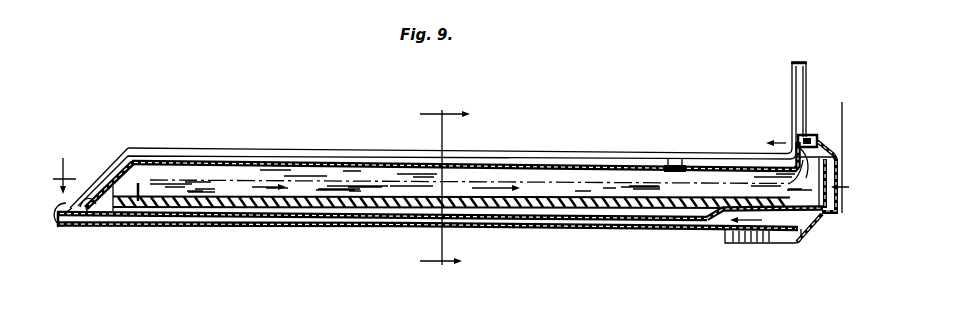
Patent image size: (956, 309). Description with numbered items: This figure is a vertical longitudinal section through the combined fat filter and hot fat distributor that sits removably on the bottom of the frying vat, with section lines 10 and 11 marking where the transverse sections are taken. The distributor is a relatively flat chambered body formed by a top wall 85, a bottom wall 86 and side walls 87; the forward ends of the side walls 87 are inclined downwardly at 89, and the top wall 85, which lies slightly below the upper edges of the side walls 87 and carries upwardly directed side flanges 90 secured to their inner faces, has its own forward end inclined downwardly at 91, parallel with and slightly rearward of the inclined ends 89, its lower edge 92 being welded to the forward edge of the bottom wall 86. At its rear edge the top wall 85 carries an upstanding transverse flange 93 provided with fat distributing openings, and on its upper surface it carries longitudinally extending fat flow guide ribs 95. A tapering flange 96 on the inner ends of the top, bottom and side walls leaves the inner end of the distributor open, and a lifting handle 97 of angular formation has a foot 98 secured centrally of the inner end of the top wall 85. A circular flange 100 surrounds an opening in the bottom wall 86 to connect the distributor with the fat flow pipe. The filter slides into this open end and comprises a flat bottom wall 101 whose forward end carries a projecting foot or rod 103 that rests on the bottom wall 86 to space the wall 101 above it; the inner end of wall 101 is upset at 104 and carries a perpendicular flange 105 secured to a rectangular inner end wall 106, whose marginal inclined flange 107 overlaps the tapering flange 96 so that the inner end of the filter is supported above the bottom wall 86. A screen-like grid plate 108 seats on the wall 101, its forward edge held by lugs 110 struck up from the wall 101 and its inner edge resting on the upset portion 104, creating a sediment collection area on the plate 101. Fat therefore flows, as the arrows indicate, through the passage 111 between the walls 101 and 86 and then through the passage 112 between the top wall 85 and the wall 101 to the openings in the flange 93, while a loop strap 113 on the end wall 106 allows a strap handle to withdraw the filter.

The section line 10- 10 is at (433, 190).
The section line 11- 11 is at (451, 148).
The top wall 85 is at (497, 164).
The bottom wall 86 is at (260, 227).
The side walls 87 is at (308, 148).
The downwardly inclined forward ends 89 is at (110, 166).
The side flanges 90 is at (530, 152).
The downwardly inclined forward end 91 is at (84, 220).
The lower edge 92 is at (61, 226).
The upstanding transversely extending flange 93 is at (793, 112).
The fat flow guide ribs 95 is at (233, 161).
The tapering flange 96 is at (807, 137).
The lifting handle 97 is at (796, 91).
The foot 98 is at (708, 157).
The circular flange 100 is at (724, 242).
The flat bottom wall 101 is at (650, 214).
The foot or rod 103 is at (100, 212).
The upset bottom wall portion 104 is at (773, 212).
The perpendicular flange 105 is at (805, 149).
The inner end wall 106 is at (839, 215).
The inclined flange 107 is at (822, 140).
The screen-like grid plate 108 is at (565, 198).
The lugs 110 is at (138, 183).
The passage 111 is at (598, 223).
The passage 112 is at (410, 176).
The loop strap 113 is at (781, 192).